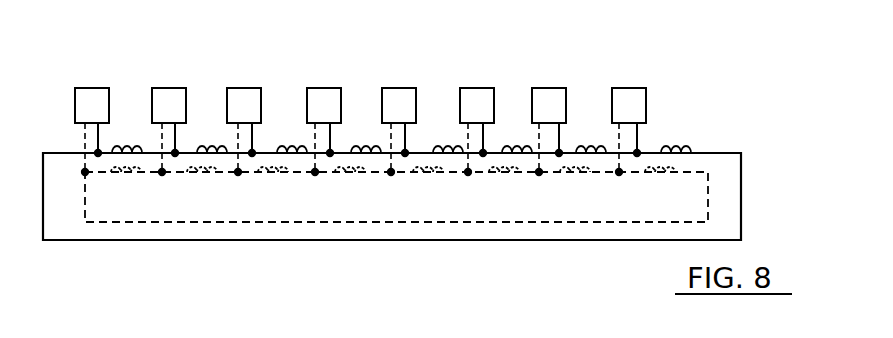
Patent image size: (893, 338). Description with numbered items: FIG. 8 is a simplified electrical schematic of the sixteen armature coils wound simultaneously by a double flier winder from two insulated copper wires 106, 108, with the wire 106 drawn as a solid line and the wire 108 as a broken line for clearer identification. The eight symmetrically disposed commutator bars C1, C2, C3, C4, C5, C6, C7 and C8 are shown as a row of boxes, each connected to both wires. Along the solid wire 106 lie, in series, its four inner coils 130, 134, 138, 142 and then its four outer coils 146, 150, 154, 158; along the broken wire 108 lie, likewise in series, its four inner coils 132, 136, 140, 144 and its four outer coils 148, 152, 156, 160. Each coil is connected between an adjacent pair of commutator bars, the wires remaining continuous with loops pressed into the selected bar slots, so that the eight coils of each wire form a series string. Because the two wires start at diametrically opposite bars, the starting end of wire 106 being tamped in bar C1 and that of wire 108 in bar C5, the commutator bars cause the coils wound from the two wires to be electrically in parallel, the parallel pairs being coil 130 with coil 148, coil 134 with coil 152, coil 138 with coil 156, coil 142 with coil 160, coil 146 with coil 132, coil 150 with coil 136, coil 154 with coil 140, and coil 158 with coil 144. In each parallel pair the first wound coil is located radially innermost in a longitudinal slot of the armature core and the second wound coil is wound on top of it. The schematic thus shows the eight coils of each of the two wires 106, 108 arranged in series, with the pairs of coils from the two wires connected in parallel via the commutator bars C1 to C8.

The insulated copper wire 106 is at (743, 176).
The insulated copper wire 108 is at (708, 208).
The inner coil 130 is at (141, 134).
The inner coil 132 is at (423, 176).
The inner coil 134 is at (207, 149).
The inner coil 136 is at (519, 176).
The inner coil 138 is at (283, 148).
The inner coil 140 is at (589, 175).
The inner coil 142 is at (365, 148).
The inner coil 144 is at (649, 175).
The outer coil 146 is at (443, 148).
The outer coil 148 is at (118, 176).
The outer coil 150 is at (515, 148).
The outer coil 152 is at (193, 174).
The outer coil 154 is at (588, 148).
The outer coil 156 is at (266, 175).
The outer coil 158 is at (677, 147).
The outer coil 160 is at (337, 176).
The commutator bar C1 is at (92, 100).
The commutator bar C2 is at (170, 100).
The commutator bar C3 is at (250, 98).
The commutator bar C4 is at (323, 98).
The commutator bar C5 is at (400, 98).
The commutator bar C6 is at (475, 98).
The commutator bar C7 is at (548, 98).
The commutator bar C8 is at (625, 98).